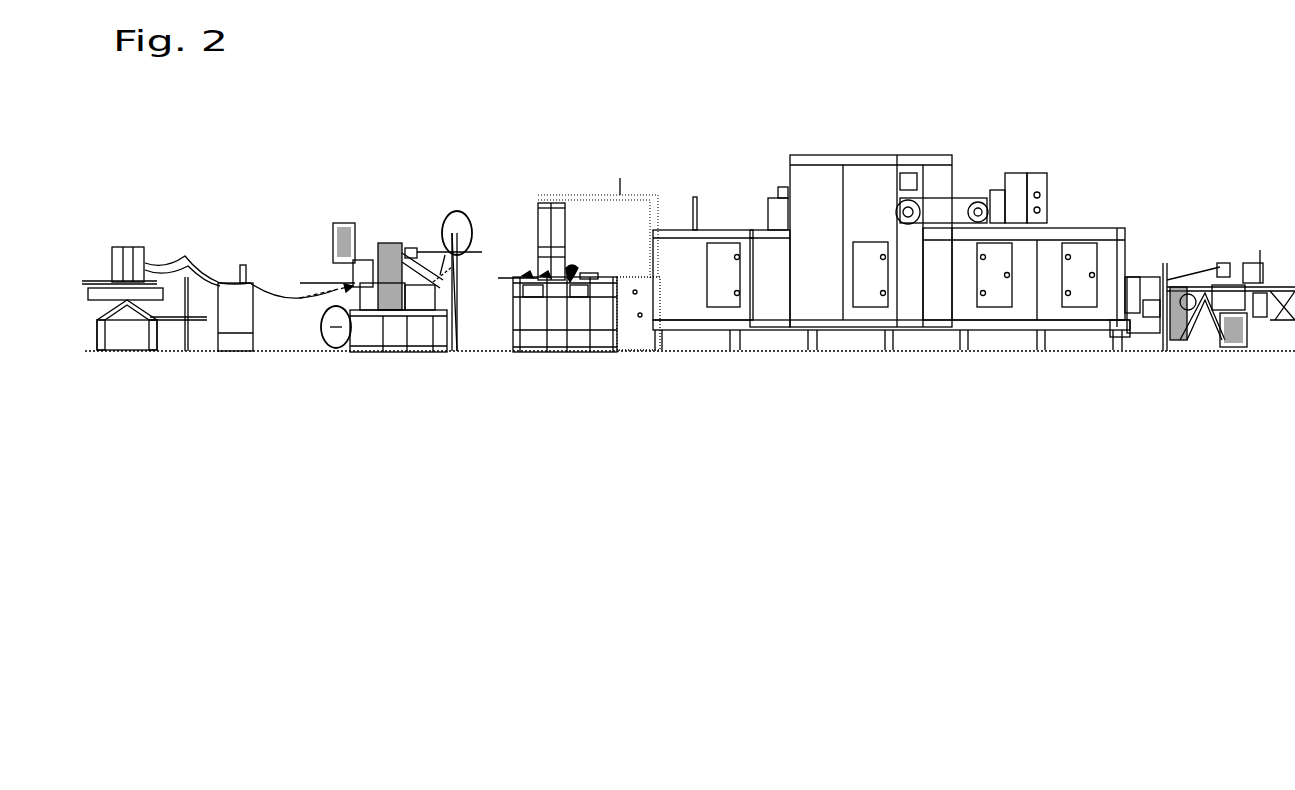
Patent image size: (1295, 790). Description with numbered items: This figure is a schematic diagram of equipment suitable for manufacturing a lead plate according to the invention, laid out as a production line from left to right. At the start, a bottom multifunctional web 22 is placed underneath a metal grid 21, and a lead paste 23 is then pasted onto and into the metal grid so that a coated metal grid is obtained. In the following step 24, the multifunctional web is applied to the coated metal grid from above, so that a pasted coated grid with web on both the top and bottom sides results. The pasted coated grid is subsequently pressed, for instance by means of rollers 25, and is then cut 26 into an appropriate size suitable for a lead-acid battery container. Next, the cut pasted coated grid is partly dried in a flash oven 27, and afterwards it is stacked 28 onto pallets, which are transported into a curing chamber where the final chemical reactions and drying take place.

The metal grid 21 is at (208, 337).
The bottom multifunctional web 22 is at (332, 350).
The lead paste 23 is at (391, 259).
The step of applying the multifunctional web from above 24 is at (453, 256).
The rollers 25 is at (522, 278).
The cutting step 26 is at (520, 373).
The flash oven 27 is at (1117, 372).
The stacking step 28 is at (1210, 373).